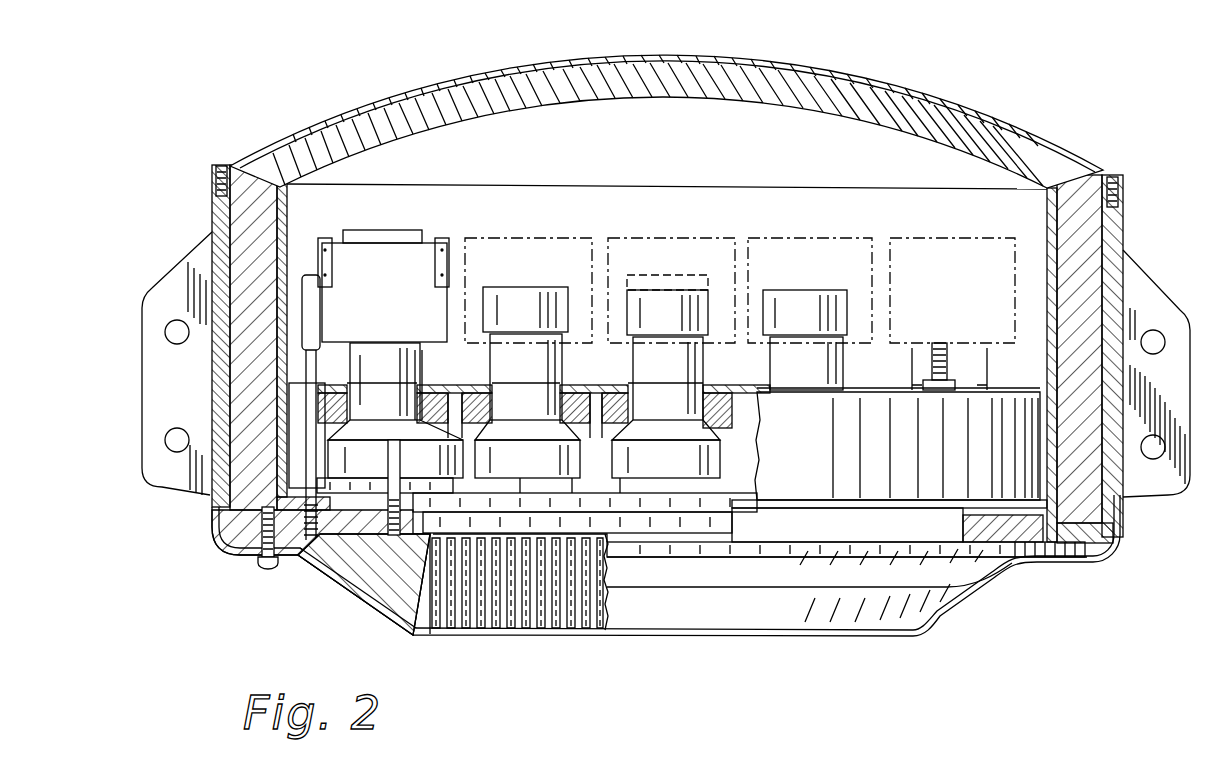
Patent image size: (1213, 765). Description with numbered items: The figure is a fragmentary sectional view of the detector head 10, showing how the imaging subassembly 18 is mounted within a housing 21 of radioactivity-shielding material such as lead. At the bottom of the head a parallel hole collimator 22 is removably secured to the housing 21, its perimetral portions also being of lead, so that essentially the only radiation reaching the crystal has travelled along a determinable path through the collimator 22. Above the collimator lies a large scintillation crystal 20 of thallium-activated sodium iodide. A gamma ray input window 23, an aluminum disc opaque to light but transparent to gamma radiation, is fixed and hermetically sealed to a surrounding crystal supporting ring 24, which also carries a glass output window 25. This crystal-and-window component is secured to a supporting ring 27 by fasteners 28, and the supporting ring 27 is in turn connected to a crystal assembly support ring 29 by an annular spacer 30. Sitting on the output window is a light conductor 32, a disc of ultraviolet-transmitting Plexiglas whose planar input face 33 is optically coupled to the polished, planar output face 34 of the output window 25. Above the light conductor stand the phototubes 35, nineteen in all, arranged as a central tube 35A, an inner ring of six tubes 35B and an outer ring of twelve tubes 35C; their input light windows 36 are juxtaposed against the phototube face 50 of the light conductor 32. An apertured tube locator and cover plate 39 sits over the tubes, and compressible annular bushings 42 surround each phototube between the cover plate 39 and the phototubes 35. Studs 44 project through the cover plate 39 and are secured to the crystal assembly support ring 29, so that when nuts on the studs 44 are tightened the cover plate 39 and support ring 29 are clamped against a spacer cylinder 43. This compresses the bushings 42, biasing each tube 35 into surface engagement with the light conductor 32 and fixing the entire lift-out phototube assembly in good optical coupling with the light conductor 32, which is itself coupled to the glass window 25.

The detector head 10 is at (972, 80).
The imaging subassembly 18 is at (935, 223).
The scintillation crystal 20 is at (712, 545).
The housing 21 is at (204, 200).
The collimator 22 is at (560, 622).
The gamma ray input window 23 is at (638, 542).
The crystal supporting ring 24 is at (390, 535).
The glass output window 25 is at (733, 508).
The supporting ring 27 is at (377, 532).
The fasteners 28 is at (398, 496).
The crystal assembly support ring 29 is at (310, 560).
The annular spacer 30 is at (357, 532).
The light conductor 32 is at (750, 483).
The planar input face 33 is at (716, 498).
The output face 34 is at (645, 492).
The phototubes 35 is at (414, 364).
The central tube 35A is at (688, 297).
The inner ring tubes 35B is at (530, 297).
The outer ring tubes 35C is at (384, 379).
The input light windows 36 is at (620, 492).
The tube locator and cover plate 39 is at (620, 385).
The annular bushings 42 is at (478, 388).
The spacer cylinder 43 is at (293, 432).
The studs 44 is at (948, 340).
The phototube face 50 is at (533, 455).